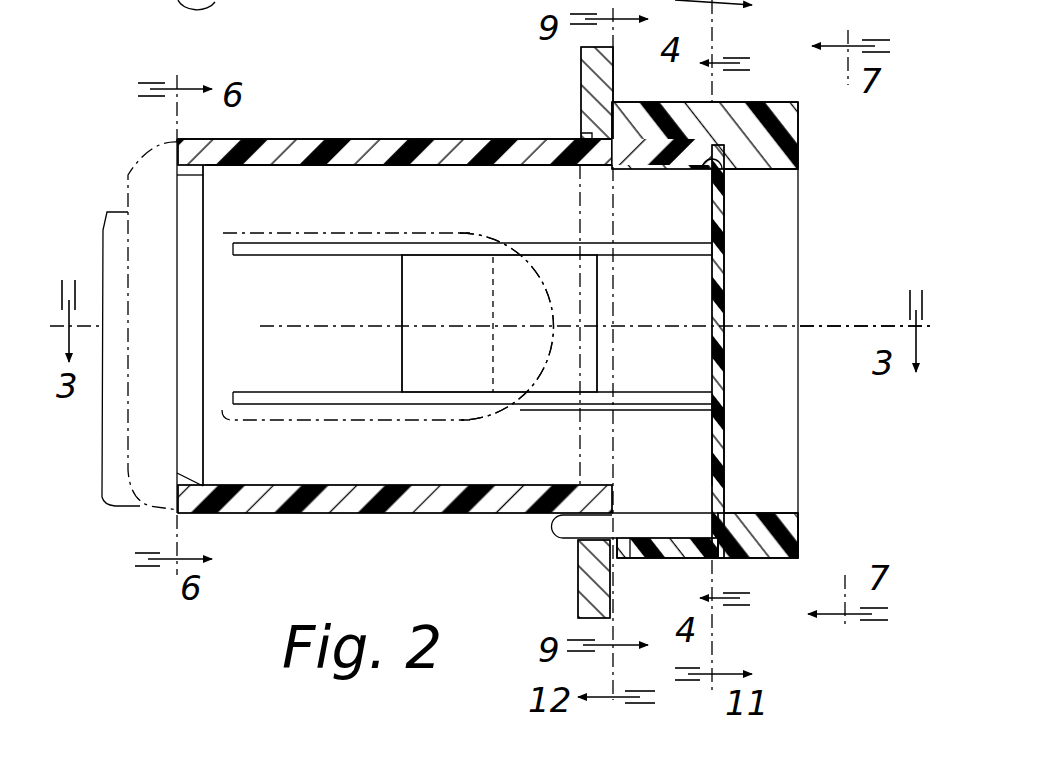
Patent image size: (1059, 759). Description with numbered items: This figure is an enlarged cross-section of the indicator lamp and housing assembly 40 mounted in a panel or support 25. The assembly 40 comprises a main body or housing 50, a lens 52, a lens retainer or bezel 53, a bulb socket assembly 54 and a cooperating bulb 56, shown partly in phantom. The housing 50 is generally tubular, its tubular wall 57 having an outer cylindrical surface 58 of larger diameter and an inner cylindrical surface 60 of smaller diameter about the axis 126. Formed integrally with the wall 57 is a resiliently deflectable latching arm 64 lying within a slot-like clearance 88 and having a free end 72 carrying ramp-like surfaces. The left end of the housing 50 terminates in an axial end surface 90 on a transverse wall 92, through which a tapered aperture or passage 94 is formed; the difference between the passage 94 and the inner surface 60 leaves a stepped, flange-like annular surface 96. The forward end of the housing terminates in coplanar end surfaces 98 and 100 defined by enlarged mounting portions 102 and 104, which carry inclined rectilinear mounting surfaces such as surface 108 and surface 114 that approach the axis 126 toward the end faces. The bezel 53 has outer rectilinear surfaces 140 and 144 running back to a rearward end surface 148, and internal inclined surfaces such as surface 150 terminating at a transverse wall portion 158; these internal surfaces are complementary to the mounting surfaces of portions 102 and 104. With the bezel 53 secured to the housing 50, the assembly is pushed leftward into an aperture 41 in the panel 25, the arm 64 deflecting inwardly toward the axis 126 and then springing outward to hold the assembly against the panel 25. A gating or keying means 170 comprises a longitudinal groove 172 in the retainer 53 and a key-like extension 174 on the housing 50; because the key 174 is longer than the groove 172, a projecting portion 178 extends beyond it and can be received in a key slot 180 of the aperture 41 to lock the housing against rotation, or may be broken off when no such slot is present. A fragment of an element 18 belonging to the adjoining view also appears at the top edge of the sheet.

The mounting bracket 18 is at (232, 0).
The panel or support 25 is at (582, 56).
The indicator lamp and housing assembly 40 is at (387, 135).
The aperture 41 is at (583, 137).
The main body or housing 50 is at (376, 517).
The lens 52 is at (712, 322).
The lens retainer or bezel 53 is at (800, 138).
The bulb socket assembly 54 is at (152, 138).
The bulb 56 is at (367, 230).
The tubular wall 57 is at (300, 150).
The outer generally cylindrical surface 58 is at (452, 139).
The inner generally cylindrical surface 60 is at (348, 166).
The latching arm 64 is at (537, 405).
The free end 72 is at (600, 300).
The slot-like clearance 88 is at (550, 250).
The axial end surface 90 is at (150, 158).
The transverse extending wall 92 is at (196, 305).
The aperture or passage 94 is at (190, 185).
The stepped or flange-like annular surface 96 is at (205, 168).
The end surface 98 is at (722, 205).
The end surface 100 is at (712, 437).
The bezel or lens retainer mounting portion 102 is at (728, 112).
The bezel or lens retainer mounting portion 104 is at (728, 560).
The rectilinear mounting surface 108 is at (628, 133).
The rectilinear mounting surface 114 is at (624, 556).
The axis 126 is at (806, 326).
The rectilinear surface 140 is at (735, 100).
The rectilinear surface 144 is at (786, 560).
The rearward-most end surface 148 is at (602, 118).
The internal rectilinear surface 150 is at (655, 143).
The transverse wall portion 158 is at (716, 180).
The gating or keying means 170 is at (672, 510).
The slot or groove 172 is at (751, 341).
The key-like extension 174 is at (666, 556).
The projecting portion 178 is at (555, 528).
The key-like slot or recess 180 is at (590, 545).